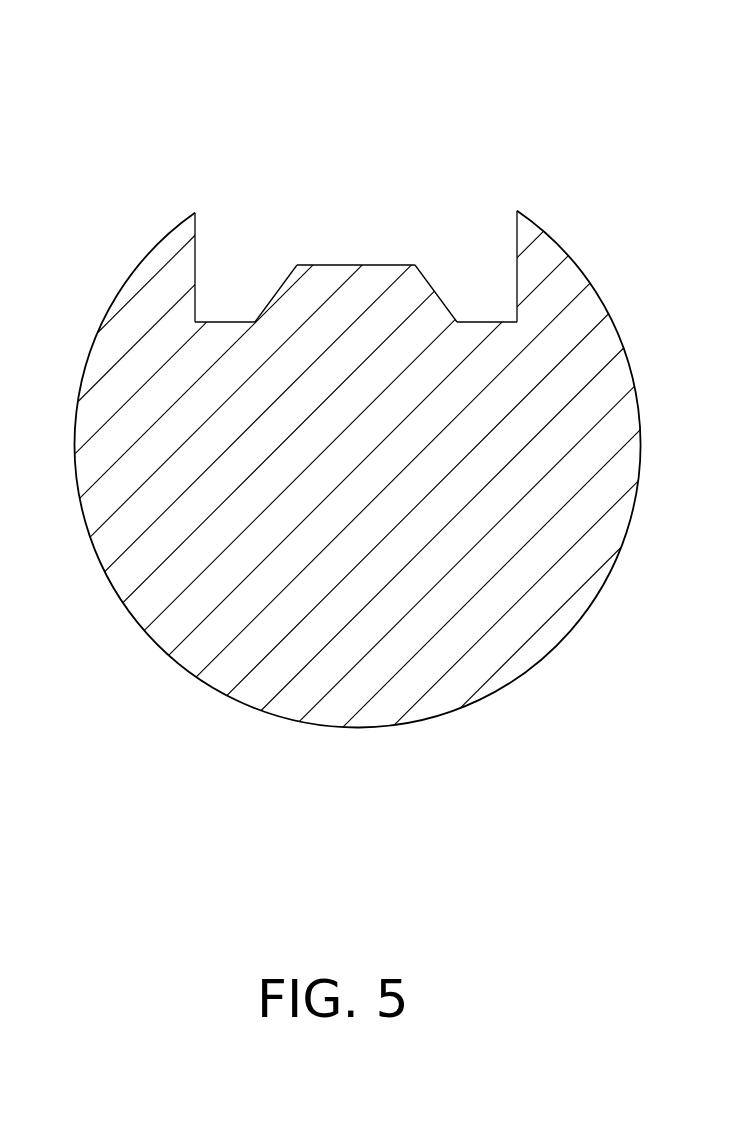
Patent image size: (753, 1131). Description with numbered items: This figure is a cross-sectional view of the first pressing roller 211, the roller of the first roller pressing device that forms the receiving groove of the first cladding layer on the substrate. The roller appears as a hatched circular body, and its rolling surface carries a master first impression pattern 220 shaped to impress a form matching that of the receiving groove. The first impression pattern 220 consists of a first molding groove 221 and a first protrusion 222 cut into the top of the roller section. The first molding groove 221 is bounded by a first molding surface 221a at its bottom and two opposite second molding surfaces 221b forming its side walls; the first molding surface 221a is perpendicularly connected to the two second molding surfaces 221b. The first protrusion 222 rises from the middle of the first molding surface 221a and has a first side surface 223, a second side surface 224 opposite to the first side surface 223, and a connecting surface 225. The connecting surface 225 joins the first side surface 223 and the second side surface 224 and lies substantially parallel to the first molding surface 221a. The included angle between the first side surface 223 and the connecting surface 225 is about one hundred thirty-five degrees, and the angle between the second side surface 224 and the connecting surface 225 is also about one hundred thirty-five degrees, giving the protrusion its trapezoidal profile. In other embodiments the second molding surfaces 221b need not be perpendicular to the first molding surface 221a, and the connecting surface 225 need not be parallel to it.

The first pressing roller 211 is at (453, 760).
The first impression pattern 220 is at (433, 41).
The first molding groove 221 is at (222, 80).
The first molding surface 221a is at (226, 322).
The second molding surfaces 221b is at (195, 265).
The first protrusion 222 is at (511, 83).
The first side surface 223 is at (262, 313).
The second side surface 224 is at (438, 295).
The connecting surface 225 is at (383, 265).